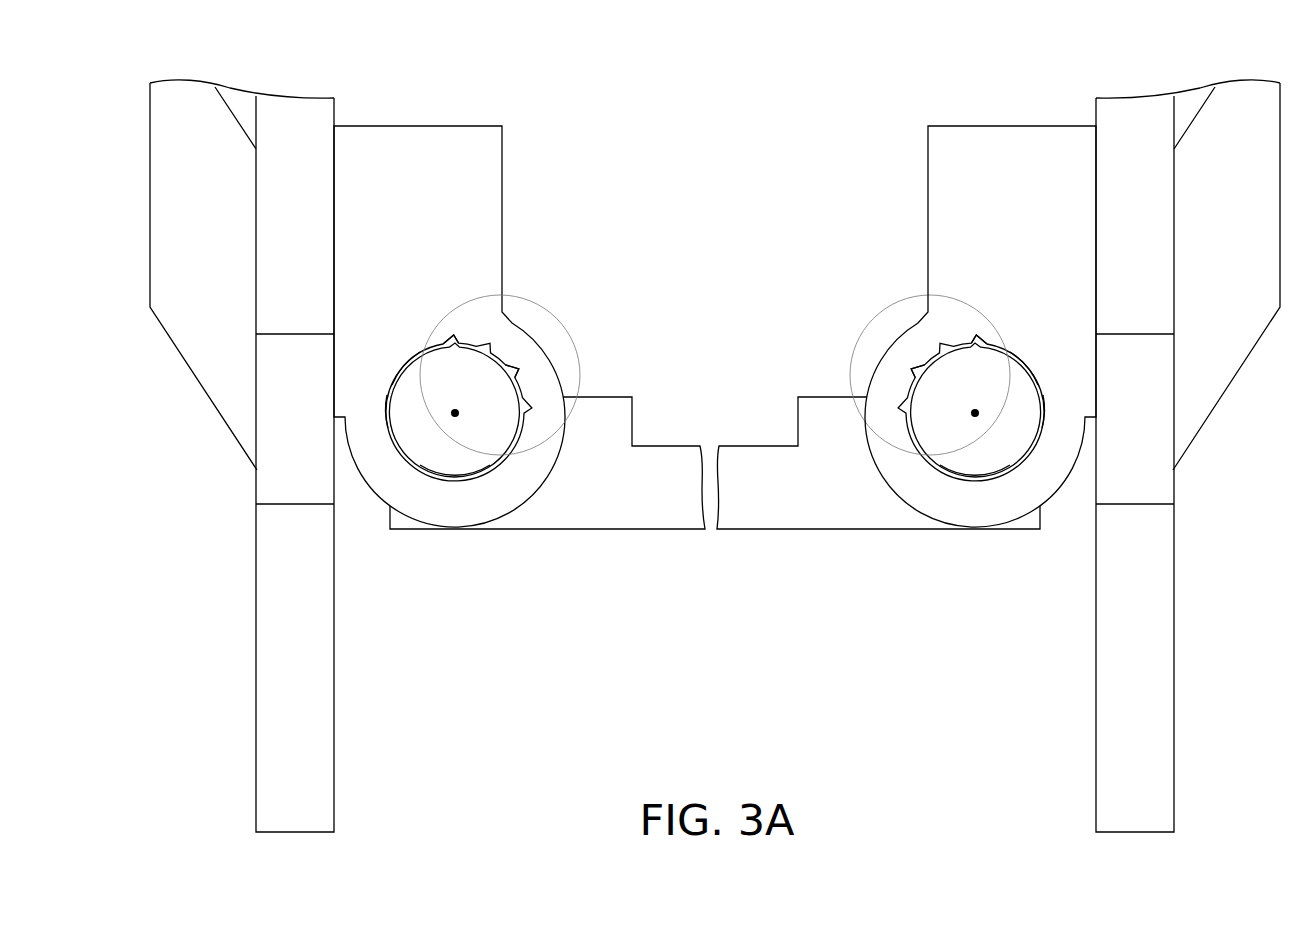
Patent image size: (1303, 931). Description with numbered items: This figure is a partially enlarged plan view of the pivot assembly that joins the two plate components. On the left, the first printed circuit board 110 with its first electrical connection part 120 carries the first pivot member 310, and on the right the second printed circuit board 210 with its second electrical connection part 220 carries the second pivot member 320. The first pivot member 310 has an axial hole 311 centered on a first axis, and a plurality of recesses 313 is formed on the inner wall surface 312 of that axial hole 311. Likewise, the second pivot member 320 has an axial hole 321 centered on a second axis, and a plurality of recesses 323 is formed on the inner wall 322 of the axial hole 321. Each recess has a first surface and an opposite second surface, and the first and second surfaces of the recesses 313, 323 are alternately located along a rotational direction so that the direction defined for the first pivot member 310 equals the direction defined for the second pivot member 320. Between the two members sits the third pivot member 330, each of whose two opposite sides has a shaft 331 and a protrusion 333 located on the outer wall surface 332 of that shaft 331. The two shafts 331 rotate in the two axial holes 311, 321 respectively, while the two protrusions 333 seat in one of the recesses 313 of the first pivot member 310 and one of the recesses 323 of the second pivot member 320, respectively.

The first printed circuit board 110 is at (296, 132).
The first electrical connection part 120 is at (285, 678).
The second printed circuit board 210 is at (1134, 132).
The second electrical connection part 220 is at (1145, 678).
The first pivot member 310 is at (417, 157).
The axial hole 311 is at (398, 368).
The inner wall surface 312 is at (394, 411).
The recesses 313 is at (526, 380).
The second pivot member 320 is at (1013, 157).
The axial hole 321 is at (1032, 368).
The inner wall 322 is at (1036, 411).
The recesses 323 is at (913, 370).
The third pivot member 330 is at (641, 493).
The shaft 331 is at (447, 453).
The outer wall surface 332 is at (488, 480).
The protrusion 333 is at (455, 339).